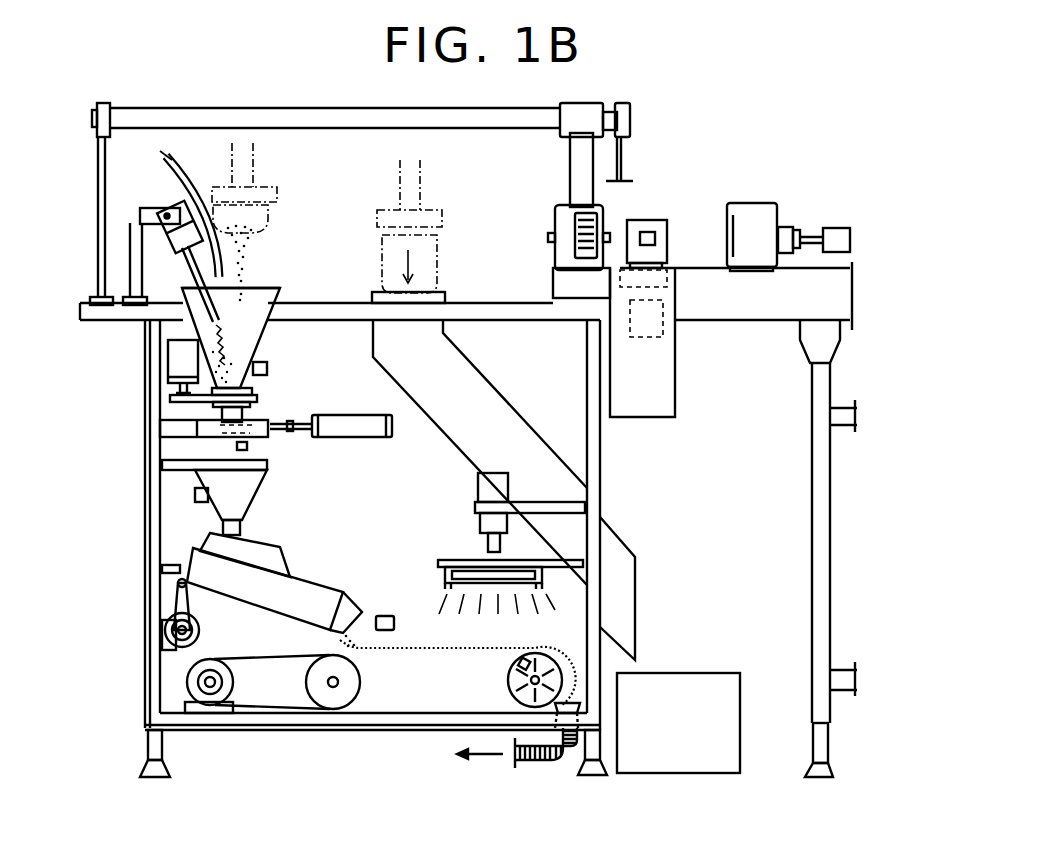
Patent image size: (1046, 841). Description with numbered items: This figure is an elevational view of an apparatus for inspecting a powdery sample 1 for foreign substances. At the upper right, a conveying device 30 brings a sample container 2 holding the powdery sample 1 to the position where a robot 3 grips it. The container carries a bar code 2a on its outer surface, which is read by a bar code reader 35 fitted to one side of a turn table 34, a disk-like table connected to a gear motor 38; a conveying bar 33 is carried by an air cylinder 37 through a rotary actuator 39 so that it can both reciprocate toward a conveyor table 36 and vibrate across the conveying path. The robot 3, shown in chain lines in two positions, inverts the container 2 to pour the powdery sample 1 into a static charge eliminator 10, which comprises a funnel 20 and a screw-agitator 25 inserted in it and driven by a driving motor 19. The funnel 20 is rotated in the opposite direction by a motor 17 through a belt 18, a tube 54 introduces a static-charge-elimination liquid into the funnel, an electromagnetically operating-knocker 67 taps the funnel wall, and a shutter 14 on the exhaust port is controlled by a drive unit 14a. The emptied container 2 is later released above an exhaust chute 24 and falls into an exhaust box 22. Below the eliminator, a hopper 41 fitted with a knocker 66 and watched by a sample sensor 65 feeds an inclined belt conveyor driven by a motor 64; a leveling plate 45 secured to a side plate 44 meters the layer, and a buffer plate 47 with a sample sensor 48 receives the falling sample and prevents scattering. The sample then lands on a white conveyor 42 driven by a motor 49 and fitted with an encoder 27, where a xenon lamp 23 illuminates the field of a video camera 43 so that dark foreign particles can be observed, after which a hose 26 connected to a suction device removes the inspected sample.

The powdery sample 1 is at (245, 261).
The sample container 2 is at (262, 214).
The bar code 2a is at (578, 242).
The robot 3 is at (256, 153).
The static charge eliminator 10 is at (290, 298).
The shutter 14 is at (200, 440).
The drive unit 14a is at (350, 437).
The motor 17 is at (180, 358).
The belt 18 is at (258, 397).
The driving motor 19 is at (155, 152).
The funnel 20 is at (253, 336).
The exhaust box 22 is at (706, 690).
The xenon lamp 23 is at (475, 580).
The exhaust chute 24 is at (457, 365).
The screw-agitator 25 is at (188, 265).
The hose 26 is at (568, 741).
The encoder 27 is at (512, 666).
The conveying device 30 is at (697, 262).
The conveying bar 33 is at (785, 225).
The turn table 34 is at (675, 283).
The bar code reader 35 is at (648, 236).
The conveyor table 36 is at (582, 268).
The air cylinder 37 is at (840, 228).
The gear motor 38 is at (675, 328).
The rotary actuator 39 is at (800, 234).
The hopper 41 is at (245, 480).
The conveyor 42 is at (360, 650).
The video camera 43 is at (495, 487).
The side plate 44 is at (205, 560).
The leveling plate 45 is at (292, 565).
The buffer plate 47 is at (353, 615).
The sample sensor 48 is at (385, 614).
The motor 49 is at (195, 682).
The tube 54 is at (176, 152).
The motor 64 is at (217, 610).
The sample sensor 65 is at (250, 447).
The electromagnetically operating-knocker 66 is at (195, 495).
The electromagnetically operating-knocker 67 is at (270, 368).